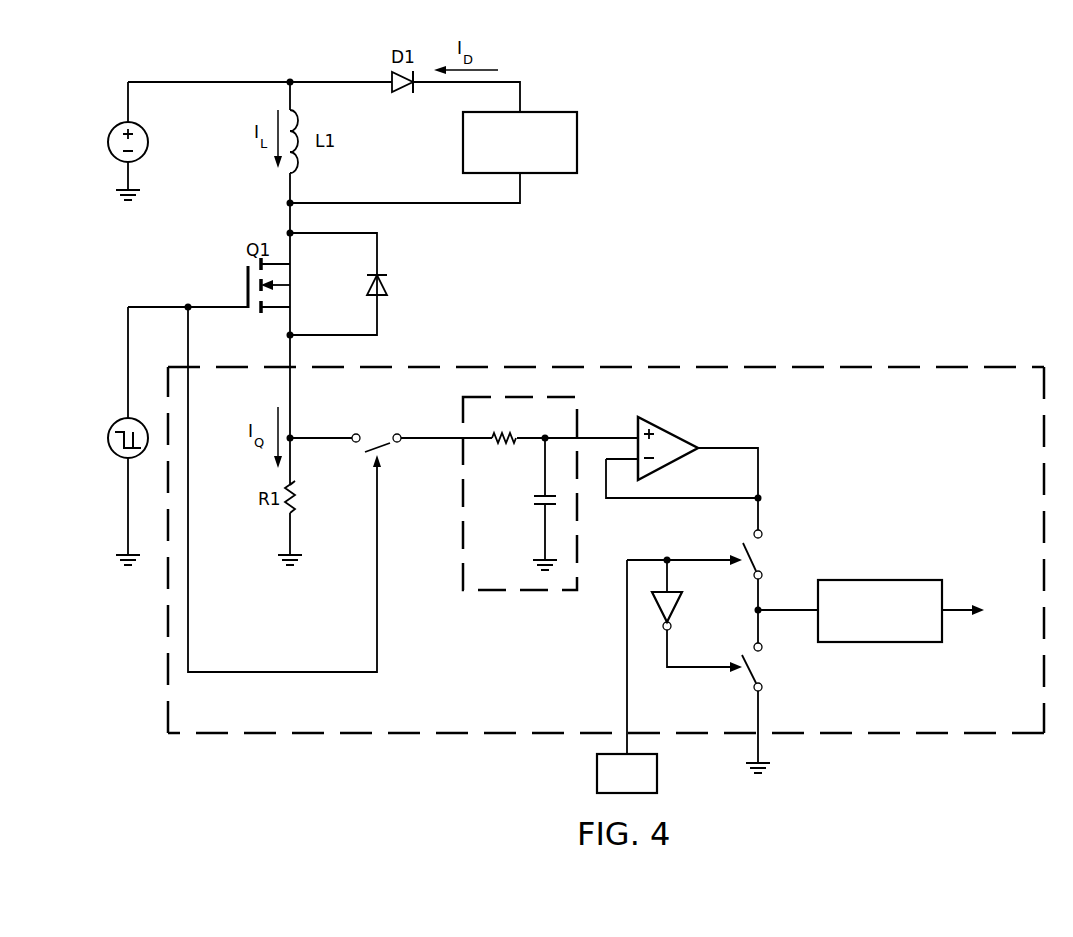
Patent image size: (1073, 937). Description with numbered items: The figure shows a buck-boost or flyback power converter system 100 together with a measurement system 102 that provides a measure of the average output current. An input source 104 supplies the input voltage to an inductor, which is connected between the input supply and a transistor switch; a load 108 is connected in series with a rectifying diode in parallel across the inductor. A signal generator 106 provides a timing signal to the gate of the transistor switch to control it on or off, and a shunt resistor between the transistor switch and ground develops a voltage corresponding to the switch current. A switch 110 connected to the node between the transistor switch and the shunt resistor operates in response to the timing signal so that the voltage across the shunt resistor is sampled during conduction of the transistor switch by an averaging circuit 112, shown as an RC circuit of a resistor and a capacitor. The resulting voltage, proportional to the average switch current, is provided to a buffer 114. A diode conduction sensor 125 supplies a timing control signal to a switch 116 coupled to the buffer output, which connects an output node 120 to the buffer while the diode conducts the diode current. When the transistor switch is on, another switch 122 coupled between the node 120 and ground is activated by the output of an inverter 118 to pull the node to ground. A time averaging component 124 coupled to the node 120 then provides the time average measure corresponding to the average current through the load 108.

The power converter system 100 is at (737, 206).
The measurement system 102 is at (770, 356).
The input source 104 is at (107, 142).
The signal generator 106 is at (107, 440).
The load 108 is at (463, 143).
The switch 110 is at (383, 450).
The averaging circuit 112 is at (495, 600).
The buffer 114 is at (668, 431).
The switch 116 is at (758, 553).
The inverter 118 is at (677, 612).
The output node 120 is at (766, 616).
The switch 122 is at (747, 673).
The time averaging component 124 is at (889, 643).
The diode conduction sensor 125 is at (597, 776).